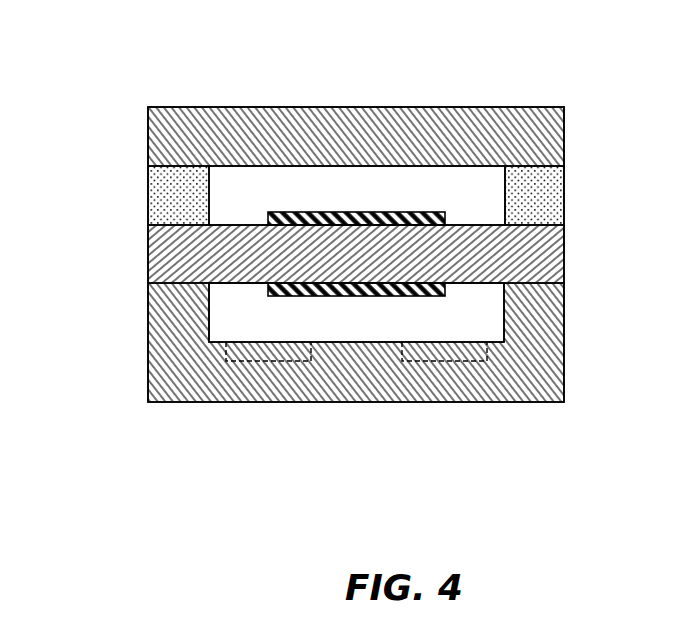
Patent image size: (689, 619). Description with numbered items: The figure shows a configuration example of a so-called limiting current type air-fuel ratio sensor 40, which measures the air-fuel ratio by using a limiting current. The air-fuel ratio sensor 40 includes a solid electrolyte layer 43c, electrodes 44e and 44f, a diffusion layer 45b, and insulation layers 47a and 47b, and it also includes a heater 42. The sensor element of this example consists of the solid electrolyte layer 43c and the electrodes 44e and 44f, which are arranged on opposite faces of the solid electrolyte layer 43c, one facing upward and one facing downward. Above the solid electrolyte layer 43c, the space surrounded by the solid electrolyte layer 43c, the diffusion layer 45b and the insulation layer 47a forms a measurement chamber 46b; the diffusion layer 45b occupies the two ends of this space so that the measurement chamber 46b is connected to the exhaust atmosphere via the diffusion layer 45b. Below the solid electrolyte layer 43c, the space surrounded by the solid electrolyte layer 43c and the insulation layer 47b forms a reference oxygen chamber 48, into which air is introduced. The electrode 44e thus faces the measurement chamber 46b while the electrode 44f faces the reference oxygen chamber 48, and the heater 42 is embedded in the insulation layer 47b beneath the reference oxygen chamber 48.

The air-fuel ratio sensor 40 is at (358, 246).
The insulation layer 47a is at (443, 107).
The insulation layer 47b is at (252, 402).
The diffusion layer 45b is at (148, 182).
The measurement chamber 46b is at (480, 202).
The electrode 44e is at (300, 212).
The solid electrolyte layer 43c is at (564, 258).
The reference oxygen chamber 48 is at (472, 322).
The electrode 44f is at (310, 296).
The heater 42 is at (264, 361).